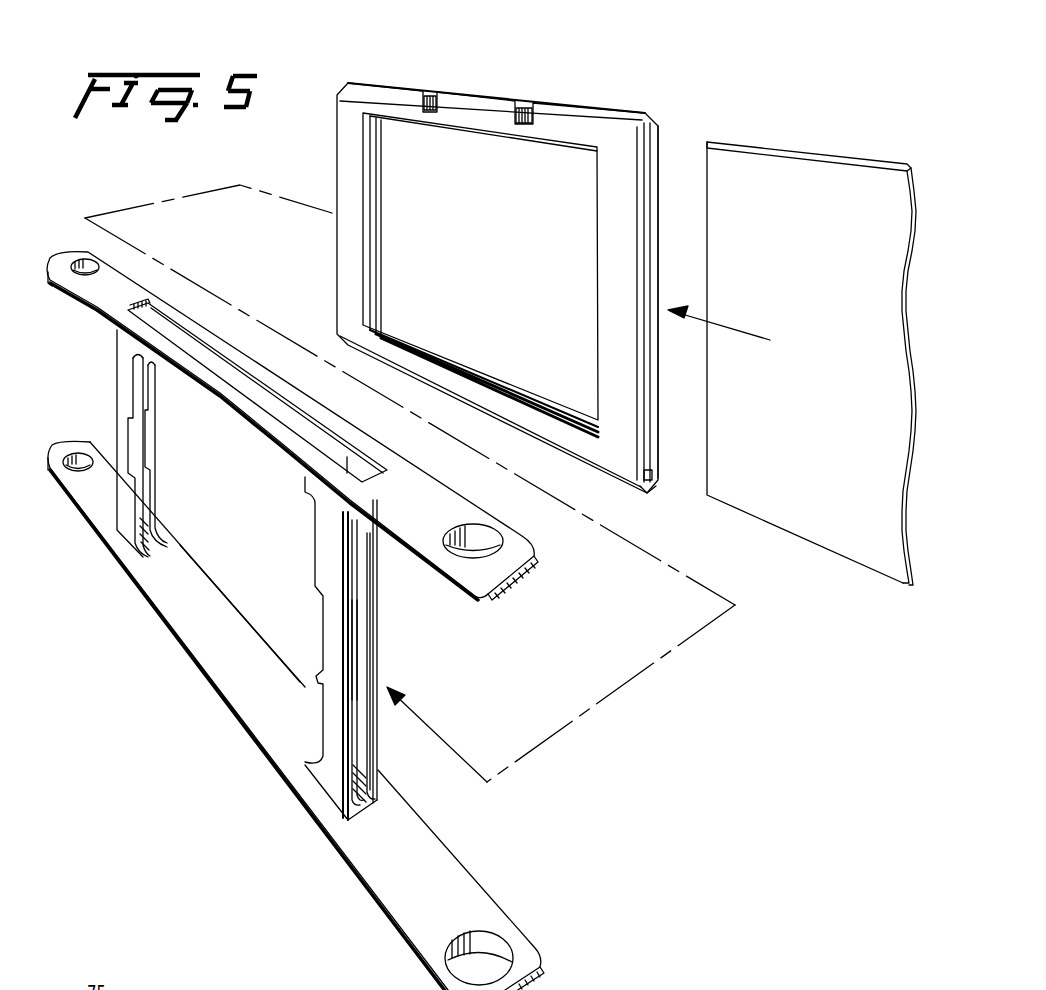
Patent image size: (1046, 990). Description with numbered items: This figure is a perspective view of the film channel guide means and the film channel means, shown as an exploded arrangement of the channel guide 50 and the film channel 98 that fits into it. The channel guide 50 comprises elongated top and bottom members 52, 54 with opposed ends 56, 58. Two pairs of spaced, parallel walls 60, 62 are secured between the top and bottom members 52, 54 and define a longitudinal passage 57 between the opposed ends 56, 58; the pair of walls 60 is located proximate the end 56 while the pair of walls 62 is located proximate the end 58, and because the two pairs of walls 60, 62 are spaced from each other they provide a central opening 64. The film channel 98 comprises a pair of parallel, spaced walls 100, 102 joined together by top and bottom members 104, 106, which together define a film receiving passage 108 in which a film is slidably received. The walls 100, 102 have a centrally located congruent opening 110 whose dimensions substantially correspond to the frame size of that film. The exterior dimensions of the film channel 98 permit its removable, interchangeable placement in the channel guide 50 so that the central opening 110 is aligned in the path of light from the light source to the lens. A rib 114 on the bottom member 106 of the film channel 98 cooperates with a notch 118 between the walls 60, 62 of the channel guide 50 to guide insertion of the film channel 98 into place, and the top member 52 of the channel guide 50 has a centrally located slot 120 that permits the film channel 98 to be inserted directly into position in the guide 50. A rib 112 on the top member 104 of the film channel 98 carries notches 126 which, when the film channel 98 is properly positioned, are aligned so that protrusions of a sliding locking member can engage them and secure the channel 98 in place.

The channel guide 50 is at (165, 696).
The top member 52 is at (425, 512).
The bottom member 54 is at (252, 741).
The opposed end 56 is at (65, 253).
The longitudinal passage 57 is at (364, 632).
The opposed end 58 is at (467, 918).
The pair of walls 60 is at (125, 372).
The pair of walls 62 is at (379, 757).
The central opening 64 is at (240, 583).
The film channel 98 is at (790, 101).
The wall 100 is at (603, 250).
The wall 102 is at (660, 152).
The top member 104 is at (582, 130).
The bottom member 106 is at (653, 474).
The film receiving passage 108 is at (656, 275).
The central opening 110 is at (422, 228).
The rib 112 is at (639, 106).
The rib 114 is at (650, 493).
The notch 118 is at (140, 543).
The slot 120 is at (200, 344).
The notches 126 is at (432, 100).